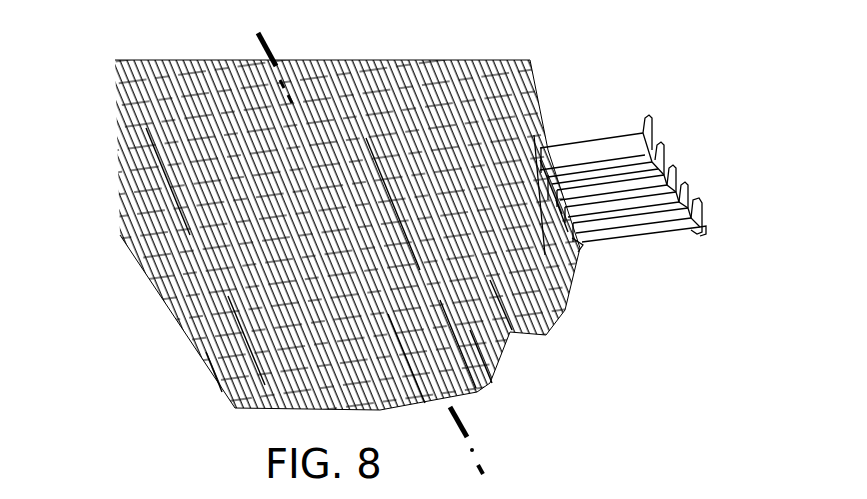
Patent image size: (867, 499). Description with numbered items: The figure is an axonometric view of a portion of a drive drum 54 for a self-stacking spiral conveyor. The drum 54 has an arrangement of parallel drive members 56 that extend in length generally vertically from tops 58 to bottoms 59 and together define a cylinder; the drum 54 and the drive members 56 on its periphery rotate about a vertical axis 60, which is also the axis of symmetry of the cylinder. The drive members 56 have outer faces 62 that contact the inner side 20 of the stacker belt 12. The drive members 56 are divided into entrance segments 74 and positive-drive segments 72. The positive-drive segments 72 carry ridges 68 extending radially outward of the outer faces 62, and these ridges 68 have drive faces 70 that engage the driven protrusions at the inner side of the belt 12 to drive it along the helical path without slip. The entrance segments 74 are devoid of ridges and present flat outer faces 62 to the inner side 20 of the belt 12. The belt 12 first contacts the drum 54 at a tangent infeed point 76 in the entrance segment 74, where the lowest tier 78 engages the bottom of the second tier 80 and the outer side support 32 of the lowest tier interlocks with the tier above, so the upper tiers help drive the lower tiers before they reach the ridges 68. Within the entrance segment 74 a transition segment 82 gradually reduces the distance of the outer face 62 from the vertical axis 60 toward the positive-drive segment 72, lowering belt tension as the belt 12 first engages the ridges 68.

The stacker belt 12 is at (548, 150).
The inner side of the belt 20 is at (562, 214).
The outer side support 32 is at (703, 205).
The drive drum 54 is at (63, 144).
The drive members 56 is at (206, 352).
The tops of the drive members 58 is at (146, 128).
The bottoms of the drive members 59 is at (492, 383).
The vertical axis 60 is at (256, 38).
The outer faces 62 is at (564, 218).
The ridges 68 is at (366, 138).
The drive faces 70 is at (228, 296).
The positive-drive segments 72 is at (388, 314).
The entrance segments 74 is at (512, 330).
The tangent infeed point 76 is at (583, 245).
The lowest tier 78 is at (703, 218).
The second tier 80 is at (690, 195).
The transition segment 82 is at (458, 342).